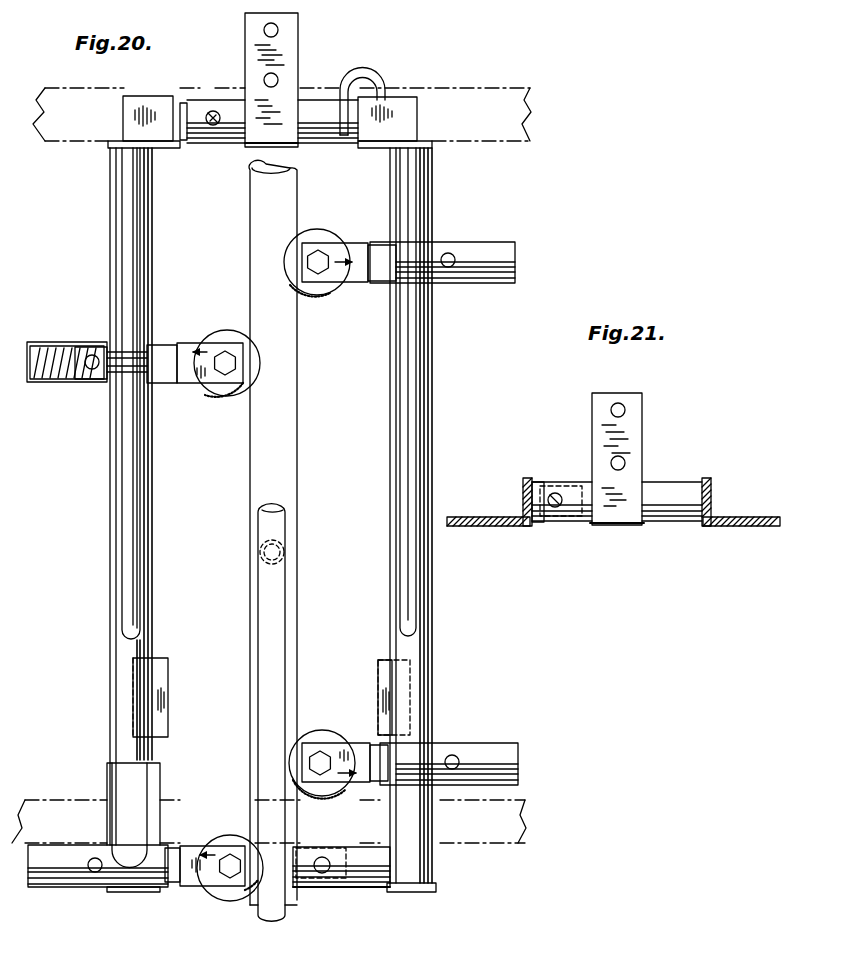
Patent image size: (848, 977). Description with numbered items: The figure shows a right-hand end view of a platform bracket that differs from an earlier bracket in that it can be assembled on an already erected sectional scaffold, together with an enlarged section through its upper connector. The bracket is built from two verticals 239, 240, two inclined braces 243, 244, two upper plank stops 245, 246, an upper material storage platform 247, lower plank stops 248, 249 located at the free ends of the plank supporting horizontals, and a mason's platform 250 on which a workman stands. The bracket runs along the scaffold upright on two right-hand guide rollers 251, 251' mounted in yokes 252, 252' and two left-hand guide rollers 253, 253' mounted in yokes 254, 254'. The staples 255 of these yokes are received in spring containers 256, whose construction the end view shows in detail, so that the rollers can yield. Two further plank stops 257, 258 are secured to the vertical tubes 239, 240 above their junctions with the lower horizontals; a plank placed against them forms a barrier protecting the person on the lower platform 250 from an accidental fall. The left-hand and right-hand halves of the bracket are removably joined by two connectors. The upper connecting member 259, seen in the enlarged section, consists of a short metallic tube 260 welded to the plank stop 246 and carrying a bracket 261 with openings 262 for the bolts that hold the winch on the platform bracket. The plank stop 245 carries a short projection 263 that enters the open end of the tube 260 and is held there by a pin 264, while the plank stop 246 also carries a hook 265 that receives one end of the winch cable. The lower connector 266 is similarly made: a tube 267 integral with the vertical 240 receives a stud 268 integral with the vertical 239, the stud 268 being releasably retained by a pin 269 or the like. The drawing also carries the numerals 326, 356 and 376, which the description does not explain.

In FIG. 20, the vertical 239 is at (112, 620).
In FIG. 20, the vertical 240 is at (433, 655).
In FIG. 20, the inclined brace 243 is at (124, 491).
In FIG. 20, the inclined brace 244 is at (410, 405).
In FIG. 21, the upper plank stop 245 is at (476, 517).
In FIG. 20, the upper plank stop 246 is at (422, 138).
In FIG. 21, the upper plank stop 246 is at (745, 515).
In FIG. 20, the upper material storage platform 247 is at (44, 144).
In FIG. 20, the lower plank stop 248 is at (108, 772).
In FIG. 20, the lower plank stop 249 is at (438, 830).
In FIG. 20, the mason's platform 250 is at (65, 799).
In FIG. 20, the right-hand guide roller 251 is at (227, 346).
In FIG. 20, the right-hand guide roller 251' is at (230, 837).
In FIG. 20, the yoke 252 is at (206, 382).
In FIG. 20, the yoke 252' is at (205, 843).
In FIG. 20, the left-hand guide roller 253 is at (318, 282).
In FIG. 20, the left-hand guide roller 253' is at (322, 745).
In FIG. 20, the yoke 254 is at (342, 242).
In FIG. 20, the yoke 254' is at (341, 741).
In FIG. 20, the staple 255 is at (160, 345).
In FIG. 20, the spring container 256 is at (70, 893).
In FIG. 20, the plank stop 257 is at (170, 680).
In FIG. 20, the plank stop 258 is at (378, 668).
In FIG. 20, the upper connecting member 259 is at (225, 152).
In FIG. 21, the upper connecting member 259 is at (694, 456).
In FIG. 20, the short metallic tube 260 is at (323, 143).
In FIG. 21, the short metallic tube 260 is at (680, 515).
In FIG. 20, the bracket 261 is at (290, 60).
In FIG. 21, the bracket 261 is at (636, 424).
In FIG. 20, the opening 262 is at (279, 30).
In FIG. 21, the opening 262 is at (612, 458).
In FIG. 20, the short projection 263 is at (190, 140).
In FIG. 21, the short projection 263 is at (538, 480).
In FIG. 20, the pin 264 is at (214, 111).
In FIG. 21, the pin 264 is at (556, 492).
In FIG. 20, the hook 265 is at (380, 78).
In FIG. 20, the lower connector 266 is at (338, 890).
In FIG. 20, the tube 267 is at (371, 888).
In FIG. 20, the stud 268 is at (343, 850).
In FIG. 20, the pin 269 is at (322, 857).
In FIG. 20, the center rod 326 is at (298, 406).
In FIG. 20, the inner rod 356 is at (290, 602).
In FIG. 20, the pin 376 is at (262, 562).